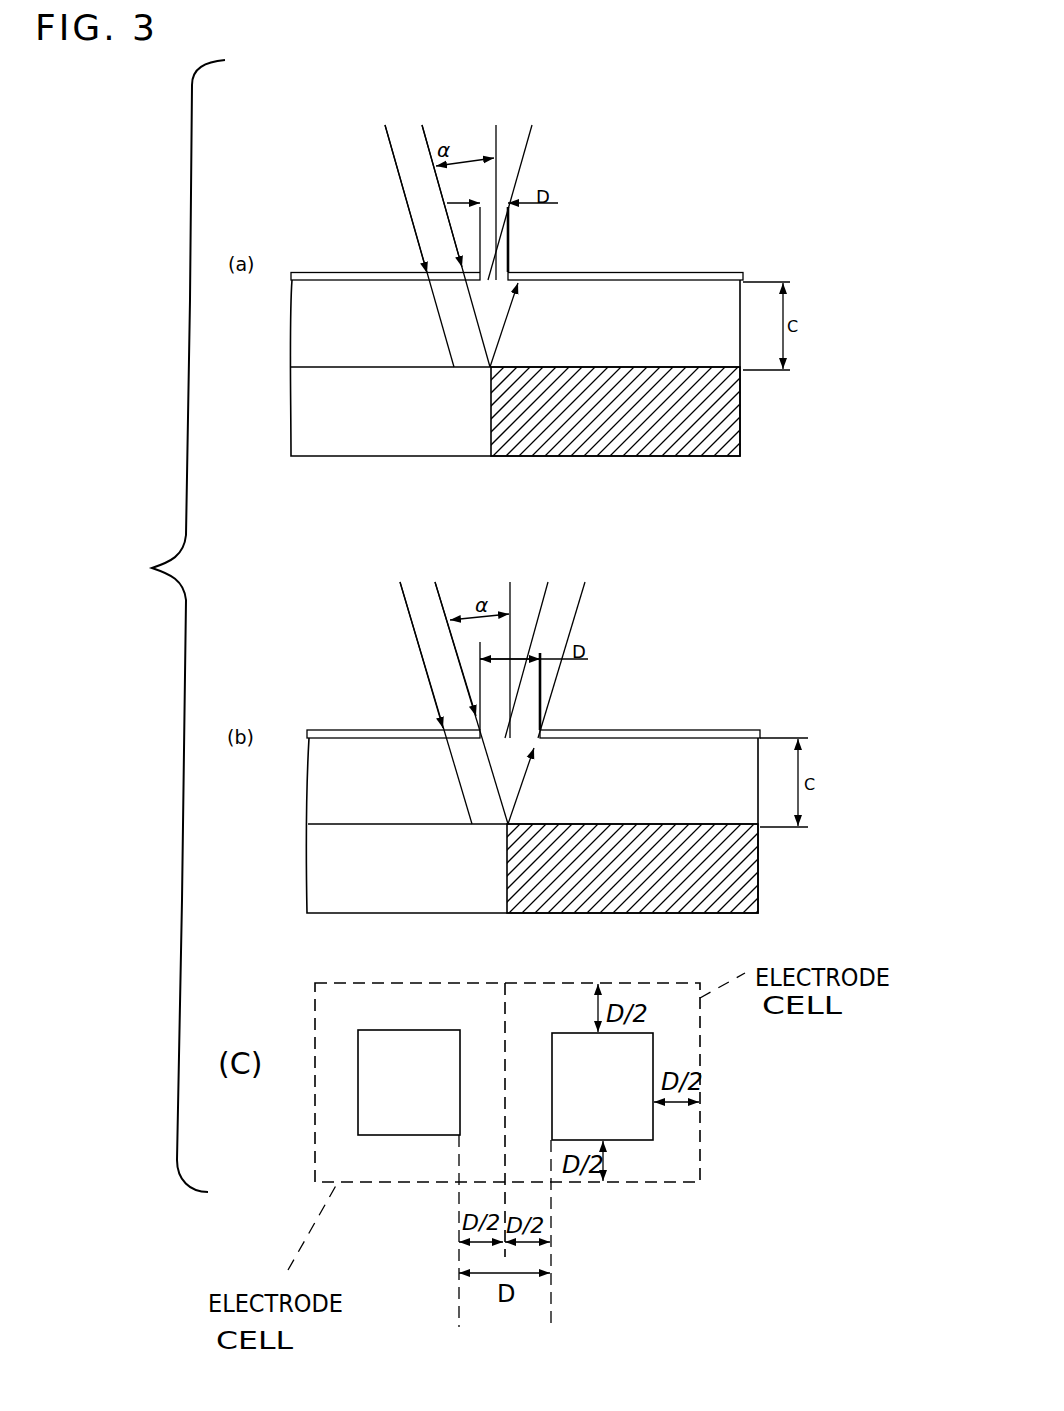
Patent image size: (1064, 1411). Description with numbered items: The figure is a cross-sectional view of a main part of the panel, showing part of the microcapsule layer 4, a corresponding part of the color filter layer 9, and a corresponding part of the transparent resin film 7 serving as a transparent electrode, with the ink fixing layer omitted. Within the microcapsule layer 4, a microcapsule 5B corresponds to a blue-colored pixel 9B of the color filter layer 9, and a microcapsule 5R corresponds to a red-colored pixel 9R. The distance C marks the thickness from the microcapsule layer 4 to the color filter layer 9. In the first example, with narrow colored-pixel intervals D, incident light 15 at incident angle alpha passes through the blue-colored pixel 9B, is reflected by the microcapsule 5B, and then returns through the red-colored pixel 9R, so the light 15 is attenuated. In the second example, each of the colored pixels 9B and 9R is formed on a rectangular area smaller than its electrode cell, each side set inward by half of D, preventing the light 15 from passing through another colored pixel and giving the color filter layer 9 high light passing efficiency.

The microcapsule layer 4 is at (627, 460).
The microcapsule 5B is at (377, 447).
The microcapsule 5R is at (545, 447).
The transparent resin film 7 is at (701, 303).
The color filter layer 9 is at (633, 268).
The blue-colored pixel 9B is at (322, 272).
The red-colored pixel 9R is at (593, 272).
The incident light 15 is at (428, 140).